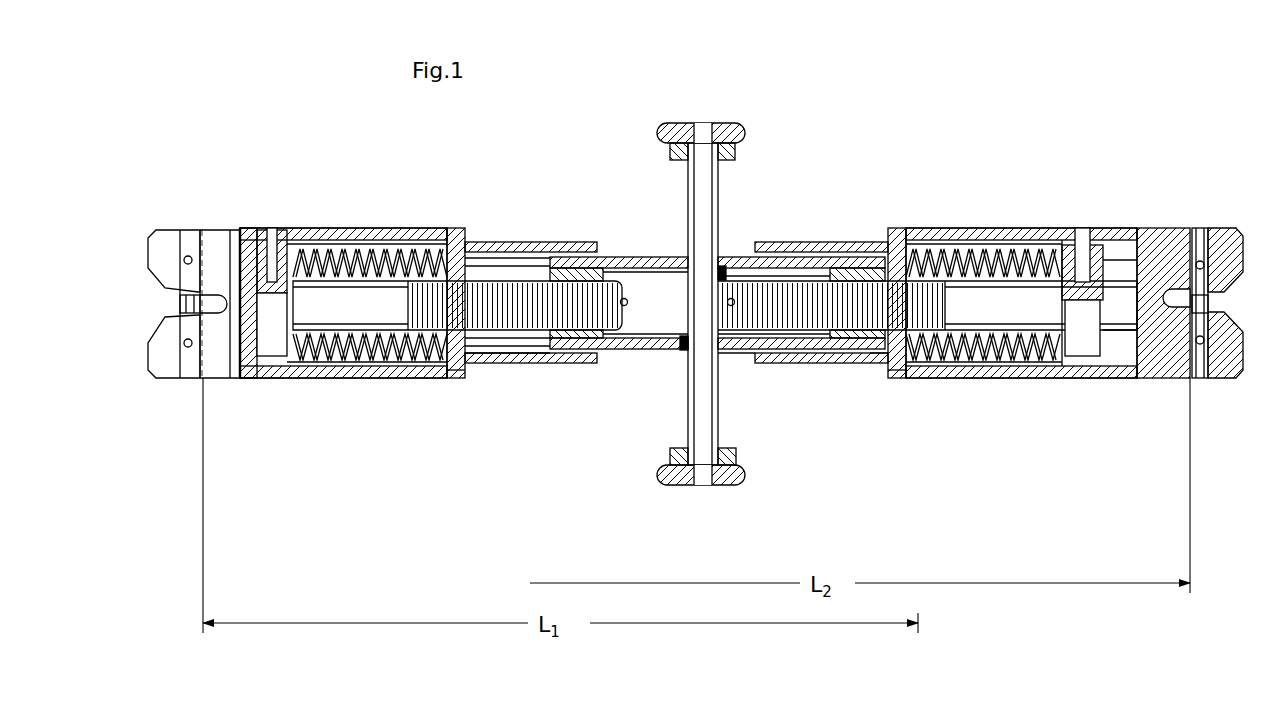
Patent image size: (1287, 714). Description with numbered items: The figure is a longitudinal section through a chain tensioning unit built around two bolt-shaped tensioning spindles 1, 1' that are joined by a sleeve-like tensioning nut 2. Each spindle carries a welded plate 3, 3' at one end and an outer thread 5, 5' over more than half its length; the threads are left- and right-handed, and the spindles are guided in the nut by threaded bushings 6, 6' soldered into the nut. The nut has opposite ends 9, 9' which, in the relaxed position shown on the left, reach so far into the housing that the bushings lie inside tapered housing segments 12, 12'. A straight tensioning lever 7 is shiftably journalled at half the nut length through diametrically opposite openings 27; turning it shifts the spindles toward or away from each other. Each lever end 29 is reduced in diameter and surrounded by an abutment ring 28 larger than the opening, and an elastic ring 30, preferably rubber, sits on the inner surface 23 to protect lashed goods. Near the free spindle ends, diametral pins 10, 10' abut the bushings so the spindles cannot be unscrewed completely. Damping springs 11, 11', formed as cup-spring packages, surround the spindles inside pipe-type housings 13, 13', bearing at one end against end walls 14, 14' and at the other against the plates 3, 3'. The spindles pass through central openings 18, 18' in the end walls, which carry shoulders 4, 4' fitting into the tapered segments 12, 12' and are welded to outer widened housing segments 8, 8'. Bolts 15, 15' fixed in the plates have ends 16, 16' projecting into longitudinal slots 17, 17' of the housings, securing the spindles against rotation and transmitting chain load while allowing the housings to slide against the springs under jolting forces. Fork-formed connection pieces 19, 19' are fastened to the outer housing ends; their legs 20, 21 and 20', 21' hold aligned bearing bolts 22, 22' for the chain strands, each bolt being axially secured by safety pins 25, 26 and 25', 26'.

The tensioning spindle 1 is at (457, 265).
The tensioning spindle 1' is at (927, 267).
The tensioning nut 2 is at (648, 258).
The plate 3 is at (263, 283).
The plate 3' is at (1072, 275).
The shoulder 4 is at (507, 386).
The shoulder 4' is at (901, 396).
The outer thread 5 is at (507, 329).
The outer thread 5' is at (774, 338).
The threaded bushing 6 is at (579, 269).
The threaded bushing 6' is at (857, 269).
The tensioning lever 7 is at (694, 412).
The outer widened housing segment 8 is at (343, 330).
The outer widened housing segment 8' is at (1021, 327).
The tensioning nut end 9 is at (619, 370).
The tensioning nut end 9' is at (776, 376).
The pin 10 is at (648, 302).
The pin 10' is at (757, 254).
The damping spring 11 is at (370, 267).
The damping spring 11' is at (983, 274).
The tapered housing segment 12 is at (531, 280).
The tapered housing segment 12' is at (821, 277).
The pipe-type housing 13 is at (343, 211).
The pipe-type housing 13' is at (1021, 214).
The end wall 14 is at (466, 278).
The end wall 14' is at (907, 274).
The bolt 15 is at (272, 324).
The bolt 15' is at (1083, 328).
The bolt end 16 is at (283, 230).
The bolt end 16' is at (1094, 228).
The longitudinal slot 17 is at (367, 273).
The longitudinal slot 17' is at (1029, 268).
The central opening 18 is at (441, 394).
The central opening 18' is at (875, 381).
The fork-formed connection piece 19 is at (220, 276).
The fork-formed connection piece 19' is at (1148, 276).
The leg 20 is at (164, 240).
The leg 20' is at (1233, 238).
The leg 21 is at (154, 356).
The leg 21' is at (1233, 365).
The bearing bolt 22 is at (162, 304).
The bearing bolt 22' is at (1176, 322).
The inner surface 23 is at (730, 162).
The safety pin 25 is at (189, 226).
The safety pin 25' is at (1241, 253).
The safety pin 26 is at (175, 382).
The safety pin 26' is at (1241, 331).
The opening 27 is at (722, 264).
The abutment 28 is at (668, 126).
The tension lever end 29 is at (700, 135).
The elastic ring 30 is at (678, 162).